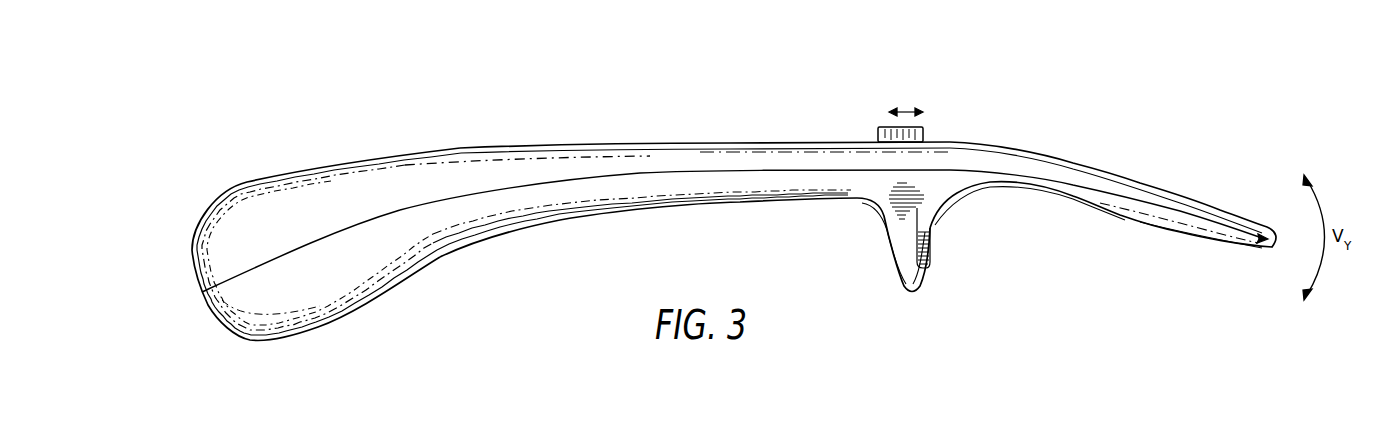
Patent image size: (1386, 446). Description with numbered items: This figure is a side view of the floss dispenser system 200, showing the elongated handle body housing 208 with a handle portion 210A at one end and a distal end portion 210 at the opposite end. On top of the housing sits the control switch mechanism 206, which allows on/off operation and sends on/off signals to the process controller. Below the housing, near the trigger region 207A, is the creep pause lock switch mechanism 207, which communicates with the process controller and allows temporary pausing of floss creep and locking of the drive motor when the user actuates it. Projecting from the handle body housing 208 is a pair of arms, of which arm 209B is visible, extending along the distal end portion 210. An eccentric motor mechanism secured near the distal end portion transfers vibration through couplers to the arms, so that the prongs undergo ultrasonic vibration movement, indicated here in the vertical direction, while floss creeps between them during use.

The floss dispenser system 200 is at (218, 154).
The control switch mechanism 206 is at (928, 132).
The creep pause lock switch mechanism 207 is at (931, 252).
The trigger region 207A is at (888, 257).
The handle body housing 208 is at (403, 283).
The arm 209B is at (1173, 228).
The distal end portion 210 is at (1101, 104).
The handle portion 210A is at (237, 340).